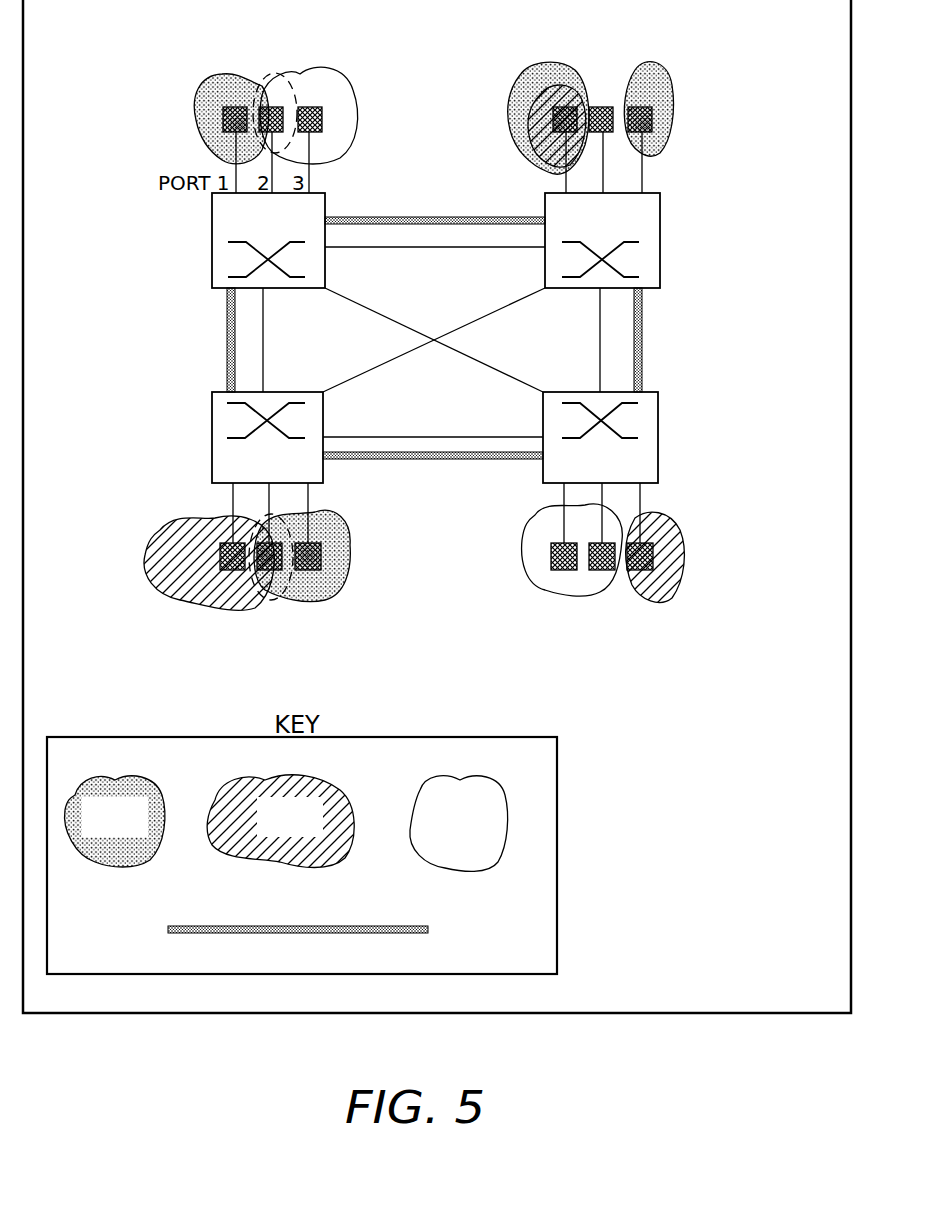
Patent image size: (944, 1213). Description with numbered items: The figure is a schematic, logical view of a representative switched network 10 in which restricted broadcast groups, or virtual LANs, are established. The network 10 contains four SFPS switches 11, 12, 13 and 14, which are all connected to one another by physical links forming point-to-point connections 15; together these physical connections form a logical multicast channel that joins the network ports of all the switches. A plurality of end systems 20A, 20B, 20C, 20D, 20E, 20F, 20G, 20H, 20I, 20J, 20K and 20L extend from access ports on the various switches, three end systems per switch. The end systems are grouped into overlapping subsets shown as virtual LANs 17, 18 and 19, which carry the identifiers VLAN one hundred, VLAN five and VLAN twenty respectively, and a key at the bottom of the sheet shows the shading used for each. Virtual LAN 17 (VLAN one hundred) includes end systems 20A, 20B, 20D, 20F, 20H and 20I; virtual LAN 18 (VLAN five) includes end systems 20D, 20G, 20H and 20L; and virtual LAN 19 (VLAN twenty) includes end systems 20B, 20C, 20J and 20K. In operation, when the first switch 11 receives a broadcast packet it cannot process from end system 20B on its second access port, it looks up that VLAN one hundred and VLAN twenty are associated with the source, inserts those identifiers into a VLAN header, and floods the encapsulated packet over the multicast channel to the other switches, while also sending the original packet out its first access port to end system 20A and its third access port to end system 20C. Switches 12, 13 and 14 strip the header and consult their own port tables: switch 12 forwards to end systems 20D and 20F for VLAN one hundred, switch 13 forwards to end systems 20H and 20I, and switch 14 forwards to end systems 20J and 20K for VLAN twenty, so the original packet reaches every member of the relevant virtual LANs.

The network 10 is at (690, 262).
The SFPS switch 11 is at (325, 194).
The SFPS switch 12 is at (660, 194).
The SFPS switch 13 is at (323, 398).
The SFPS switch 14 is at (658, 398).
The point-to-point connection 15 is at (425, 248).
The virtual LAN 17 is at (166, 792).
The virtual LAN 18 is at (352, 794).
The virtual LAN 19 is at (508, 796).
The end system 20A is at (228, 106).
The end system 20B is at (272, 106).
The end system 20C is at (312, 106).
The end system 20D is at (560, 106).
The end system 20E is at (603, 106).
The end system 20F is at (645, 106).
The end system 20G is at (232, 572).
The end system 20H is at (268, 572).
The end system 20I is at (310, 572).
The end system 20J is at (562, 572).
The end system 20K is at (600, 572).
The end system 20L is at (640, 572).